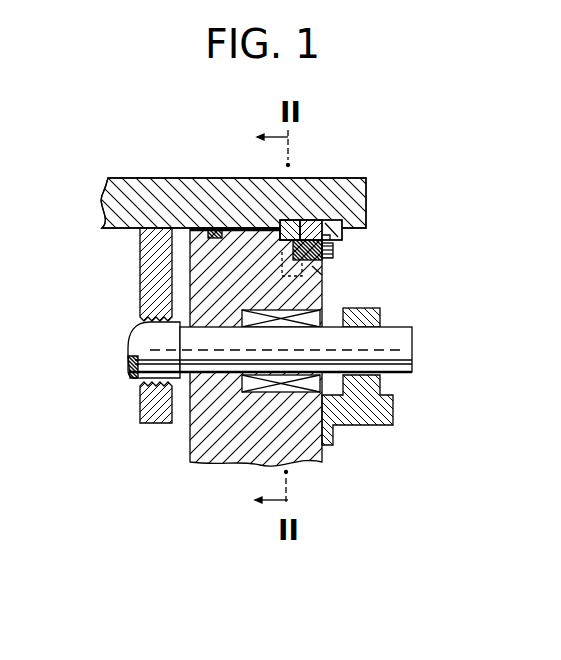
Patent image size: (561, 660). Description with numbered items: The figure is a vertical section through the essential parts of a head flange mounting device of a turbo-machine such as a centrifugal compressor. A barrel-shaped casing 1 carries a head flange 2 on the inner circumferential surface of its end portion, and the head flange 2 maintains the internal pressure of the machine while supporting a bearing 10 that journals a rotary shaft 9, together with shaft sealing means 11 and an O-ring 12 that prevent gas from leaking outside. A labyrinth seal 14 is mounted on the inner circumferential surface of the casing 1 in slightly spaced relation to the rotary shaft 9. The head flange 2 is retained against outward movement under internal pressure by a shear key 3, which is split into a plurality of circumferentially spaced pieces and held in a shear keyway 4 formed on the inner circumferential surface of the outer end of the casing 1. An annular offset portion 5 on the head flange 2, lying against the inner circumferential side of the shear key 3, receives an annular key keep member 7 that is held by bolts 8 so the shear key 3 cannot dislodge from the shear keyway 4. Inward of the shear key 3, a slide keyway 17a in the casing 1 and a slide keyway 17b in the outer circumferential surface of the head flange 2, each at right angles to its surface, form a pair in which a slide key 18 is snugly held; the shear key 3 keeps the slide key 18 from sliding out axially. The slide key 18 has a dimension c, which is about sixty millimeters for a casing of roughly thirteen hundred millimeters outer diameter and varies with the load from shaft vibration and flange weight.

The casing 1 is at (158, 181).
The head flange 2 is at (323, 455).
The shear key 3 is at (342, 238).
The shear keyway 4 is at (318, 216).
The annular offset portion 5 is at (314, 268).
The annular key keep member 7 is at (335, 244).
The bolts 8 is at (330, 256).
The rotary shaft 9 is at (411, 350).
The bearing 10 is at (382, 385).
The shaft sealing means 11 is at (267, 393).
The O-ring 12 is at (233, 203).
The labyrinth seal 14 is at (145, 310).
The slide keyway 17a is at (295, 222).
The slide keyway 17b is at (283, 240).
The slide key 18 is at (286, 219).
The dimension of slide key c is at (292, 280).